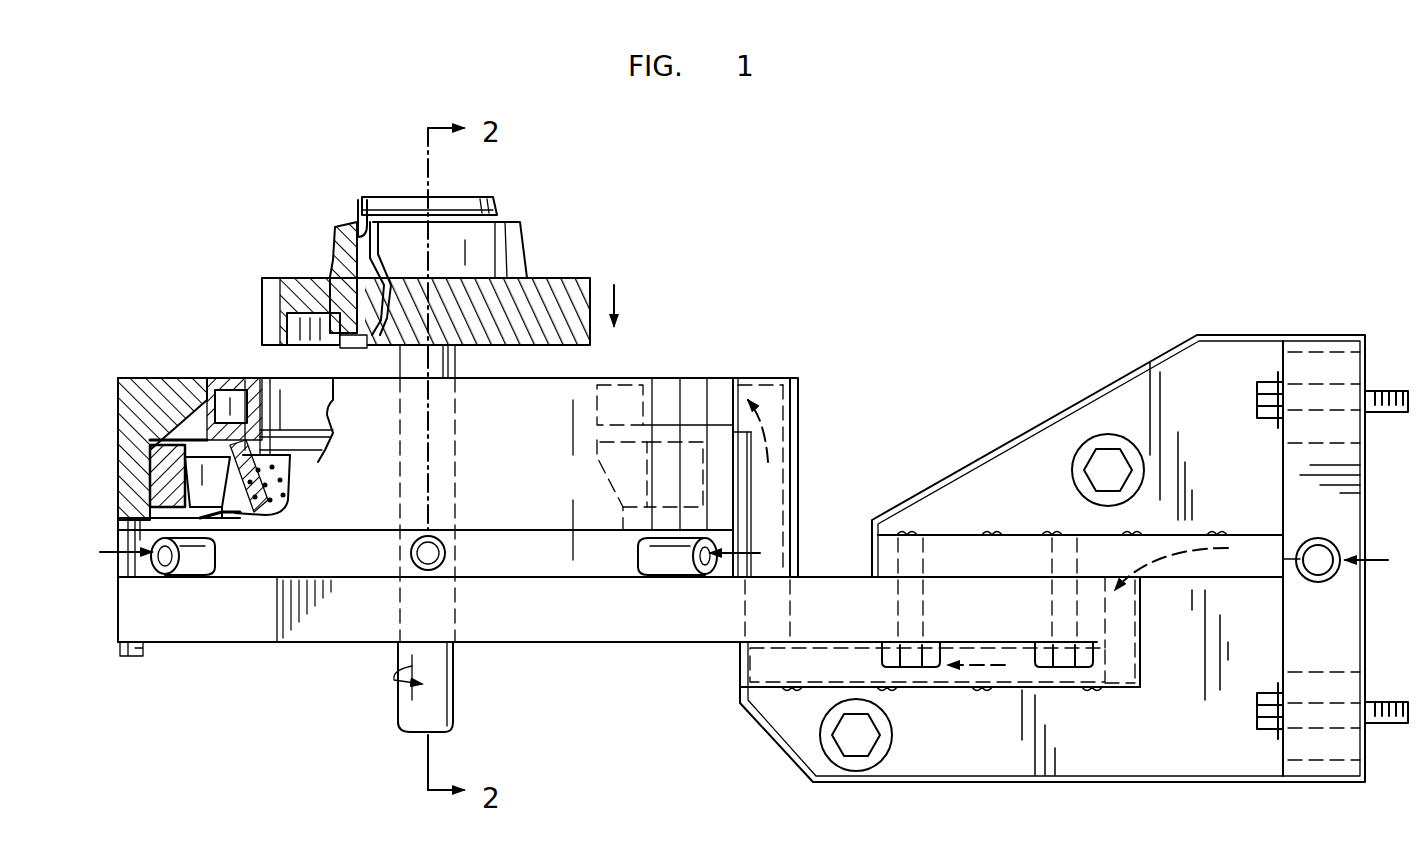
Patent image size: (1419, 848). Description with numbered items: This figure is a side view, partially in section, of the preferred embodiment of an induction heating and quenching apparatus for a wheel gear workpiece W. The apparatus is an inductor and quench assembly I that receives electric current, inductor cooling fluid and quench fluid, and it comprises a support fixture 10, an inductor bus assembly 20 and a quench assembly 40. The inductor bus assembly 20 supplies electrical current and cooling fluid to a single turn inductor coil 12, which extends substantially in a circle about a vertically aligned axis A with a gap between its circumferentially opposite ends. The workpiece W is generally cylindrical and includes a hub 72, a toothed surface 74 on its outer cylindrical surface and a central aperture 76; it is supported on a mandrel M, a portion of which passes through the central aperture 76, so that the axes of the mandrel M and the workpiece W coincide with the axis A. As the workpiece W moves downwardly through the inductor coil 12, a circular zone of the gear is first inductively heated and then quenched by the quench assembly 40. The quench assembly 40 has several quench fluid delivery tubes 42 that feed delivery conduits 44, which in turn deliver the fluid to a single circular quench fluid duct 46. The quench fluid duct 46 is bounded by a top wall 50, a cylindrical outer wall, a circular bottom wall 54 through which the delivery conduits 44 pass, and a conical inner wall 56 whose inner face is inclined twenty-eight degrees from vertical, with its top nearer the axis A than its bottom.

The inductor and quench assembly I is at (816, 376).
The support fixture 10 is at (1130, 398).
The single turn inductor coil 12 is at (230, 388).
The inductor bus assembly 20 is at (778, 437).
The quench assembly 40 is at (150, 480).
The quench fluid delivery tubes 42 is at (197, 565).
The delivery conduits 44 is at (215, 505).
The circular quench fluid duct 46 is at (172, 420).
The top wall 50 is at (202, 440).
The circular bottom wall 54 is at (178, 520).
The conical inner wall 56 is at (290, 465).
The hub 72 is at (340, 262).
The toothed surface 74 is at (598, 280).
The central aperture 76 is at (362, 210).
The axis A is at (432, 205).
The mandrel M is at (386, 205).
The workpiece W is at (550, 258).